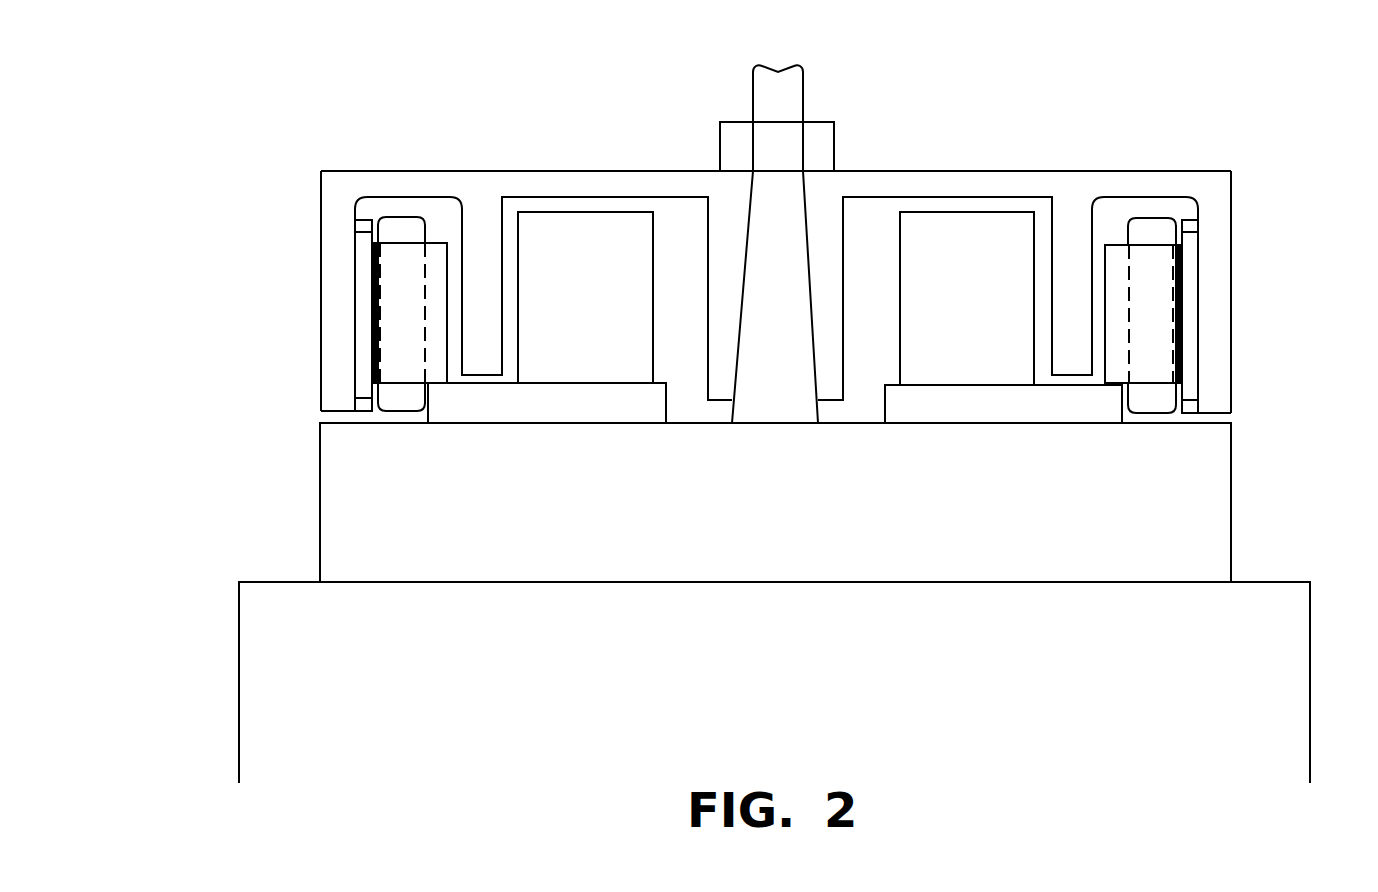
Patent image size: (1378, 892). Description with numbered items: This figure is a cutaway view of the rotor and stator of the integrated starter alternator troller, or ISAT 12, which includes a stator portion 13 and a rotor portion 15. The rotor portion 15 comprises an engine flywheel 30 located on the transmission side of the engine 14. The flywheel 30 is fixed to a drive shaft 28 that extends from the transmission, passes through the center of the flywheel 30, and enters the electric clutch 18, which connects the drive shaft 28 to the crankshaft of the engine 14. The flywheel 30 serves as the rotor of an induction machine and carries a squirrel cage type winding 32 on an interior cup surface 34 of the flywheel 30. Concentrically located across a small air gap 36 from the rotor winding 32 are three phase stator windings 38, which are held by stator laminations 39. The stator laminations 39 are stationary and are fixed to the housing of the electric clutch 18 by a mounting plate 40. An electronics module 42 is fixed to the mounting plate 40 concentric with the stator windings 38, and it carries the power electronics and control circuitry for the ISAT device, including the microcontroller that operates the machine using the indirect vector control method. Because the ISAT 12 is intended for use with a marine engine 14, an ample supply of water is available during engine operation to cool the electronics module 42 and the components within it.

The ISAT 12 is at (896, 157).
The stator portion 13 is at (438, 253).
The engine 14 is at (379, 676).
The rotor portion 15 is at (477, 193).
The electric clutch 18 is at (456, 523).
The drive shaft 28 is at (765, 85).
The engine flywheel 30 is at (1178, 180).
The squirrel cage type winding 32 is at (366, 219).
The interior cup surface 34 is at (308, 321).
The air gap 36 is at (373, 293).
The three phase stator windings 38 is at (397, 223).
The stator laminations 39 is at (1117, 255).
The mounting plate 40 is at (604, 417).
The electronics module 42 is at (576, 269).